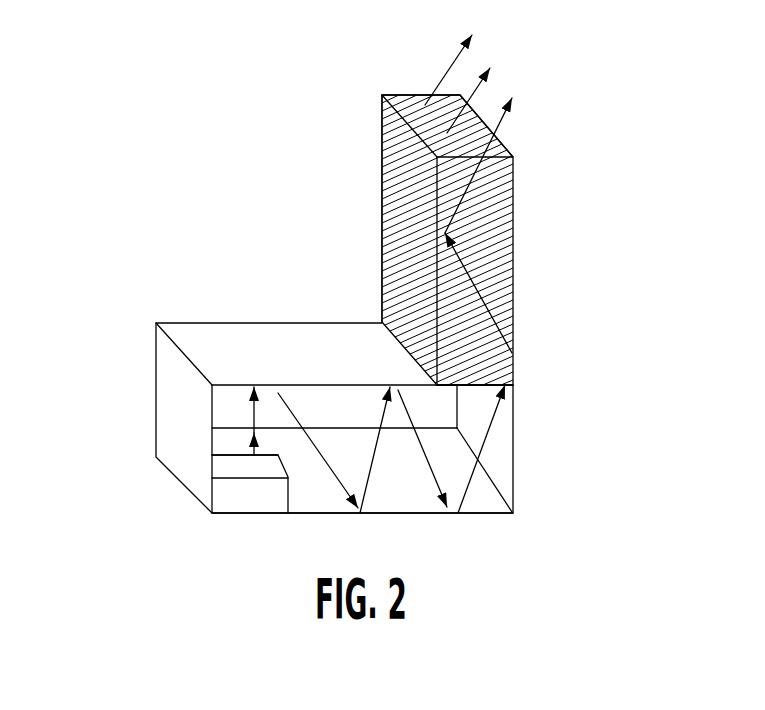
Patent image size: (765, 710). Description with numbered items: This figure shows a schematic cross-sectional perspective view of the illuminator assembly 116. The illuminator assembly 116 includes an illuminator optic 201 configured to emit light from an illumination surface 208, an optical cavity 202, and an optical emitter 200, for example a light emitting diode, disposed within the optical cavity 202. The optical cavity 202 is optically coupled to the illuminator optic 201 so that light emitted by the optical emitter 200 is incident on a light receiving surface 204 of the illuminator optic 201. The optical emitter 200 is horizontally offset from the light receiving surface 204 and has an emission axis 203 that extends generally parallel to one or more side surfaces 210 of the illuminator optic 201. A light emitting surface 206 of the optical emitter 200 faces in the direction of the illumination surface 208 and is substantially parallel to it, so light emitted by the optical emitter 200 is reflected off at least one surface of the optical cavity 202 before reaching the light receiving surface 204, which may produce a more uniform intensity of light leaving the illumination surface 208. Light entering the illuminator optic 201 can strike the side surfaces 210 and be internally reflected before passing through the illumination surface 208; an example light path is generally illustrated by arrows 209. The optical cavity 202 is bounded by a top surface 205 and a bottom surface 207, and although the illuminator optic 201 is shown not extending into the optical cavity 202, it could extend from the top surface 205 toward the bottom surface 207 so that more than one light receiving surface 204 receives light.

The illuminator assembly 116 is at (150, 92).
The optical emitter 200 is at (232, 498).
The illuminator optic 201 is at (382, 214).
The optical cavity 202 is at (488, 498).
The emission axis 203 is at (252, 466).
The light receiving surface 204 is at (480, 375).
The top surface 205 is at (323, 390).
The light emitting surface 206 is at (225, 463).
The bottom surface 207 is at (408, 506).
The illumination surface 208 is at (420, 117).
The arrows 209 is at (437, 498).
The side surfaces 210 is at (397, 180).